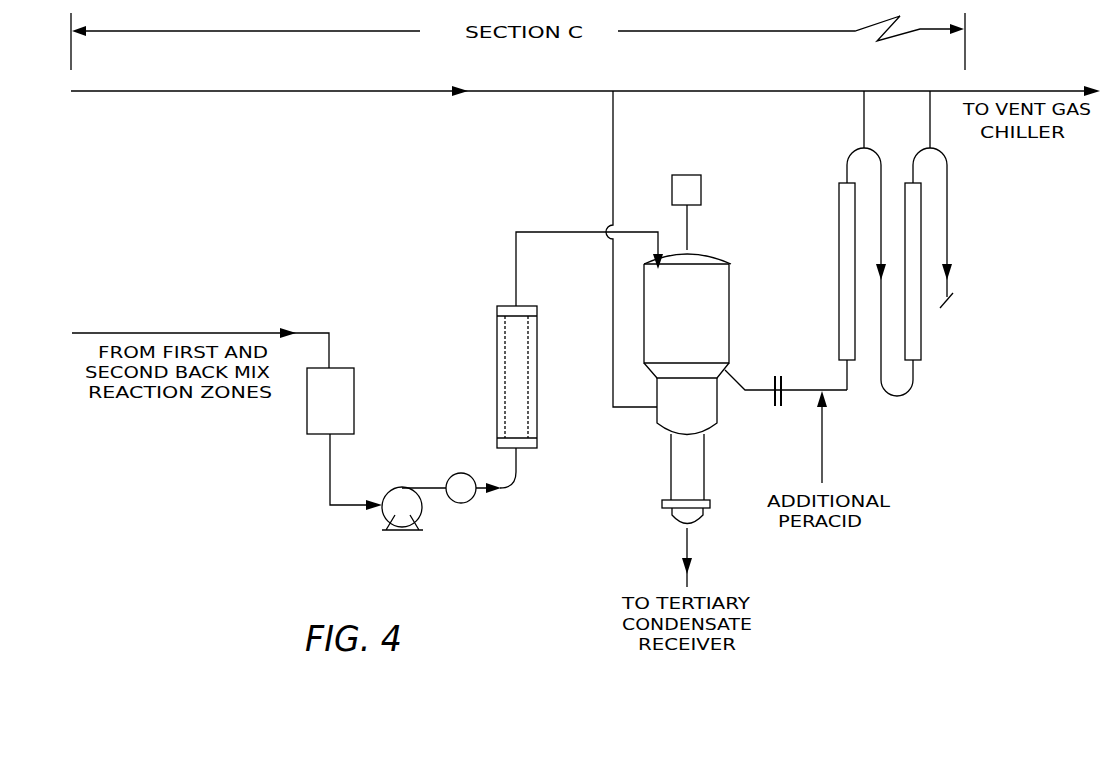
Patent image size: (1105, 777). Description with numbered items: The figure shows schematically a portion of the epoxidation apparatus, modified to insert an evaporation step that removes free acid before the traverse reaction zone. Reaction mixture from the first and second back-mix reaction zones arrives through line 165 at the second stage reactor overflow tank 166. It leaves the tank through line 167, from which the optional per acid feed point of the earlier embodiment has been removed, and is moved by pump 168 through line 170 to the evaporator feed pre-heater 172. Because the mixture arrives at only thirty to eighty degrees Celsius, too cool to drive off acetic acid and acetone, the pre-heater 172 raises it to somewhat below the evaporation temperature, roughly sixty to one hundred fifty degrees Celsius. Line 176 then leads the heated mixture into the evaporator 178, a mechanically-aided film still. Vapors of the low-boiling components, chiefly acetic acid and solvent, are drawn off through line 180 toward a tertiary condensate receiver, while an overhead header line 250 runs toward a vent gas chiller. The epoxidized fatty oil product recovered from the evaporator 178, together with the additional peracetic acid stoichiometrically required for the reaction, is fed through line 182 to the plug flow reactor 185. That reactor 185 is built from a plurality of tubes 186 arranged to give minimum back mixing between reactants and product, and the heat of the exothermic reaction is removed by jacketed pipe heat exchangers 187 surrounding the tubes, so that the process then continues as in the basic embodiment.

The main vent gas conduit 250 is at (390, 88).
The feed line from first and second back mix reaction zones 165 is at (192, 332).
The second stage reactor overflow tank 166 is at (346, 410).
The line 167 is at (352, 508).
The pump 168 is at (394, 489).
The line 170 is at (427, 487).
The evaporator feed pre-heater 172 is at (497, 370).
The line 176 is at (550, 231).
The evaporator 178 is at (731, 320).
The line 180 is at (690, 547).
The line 182 is at (796, 388).
The plug flow reactor 185 is at (1005, 176).
The tubes 186 is at (847, 165).
The jacketed pipe heat exchangers 187 is at (847, 224).